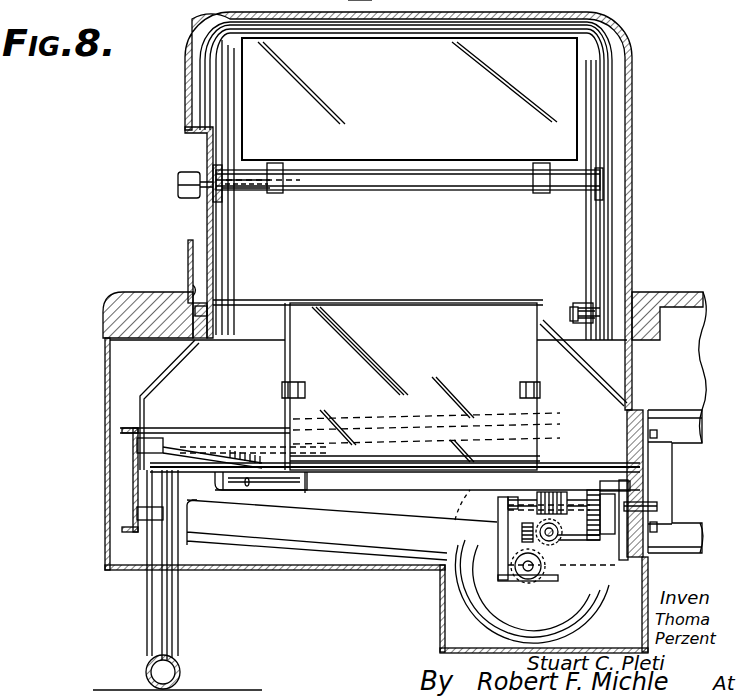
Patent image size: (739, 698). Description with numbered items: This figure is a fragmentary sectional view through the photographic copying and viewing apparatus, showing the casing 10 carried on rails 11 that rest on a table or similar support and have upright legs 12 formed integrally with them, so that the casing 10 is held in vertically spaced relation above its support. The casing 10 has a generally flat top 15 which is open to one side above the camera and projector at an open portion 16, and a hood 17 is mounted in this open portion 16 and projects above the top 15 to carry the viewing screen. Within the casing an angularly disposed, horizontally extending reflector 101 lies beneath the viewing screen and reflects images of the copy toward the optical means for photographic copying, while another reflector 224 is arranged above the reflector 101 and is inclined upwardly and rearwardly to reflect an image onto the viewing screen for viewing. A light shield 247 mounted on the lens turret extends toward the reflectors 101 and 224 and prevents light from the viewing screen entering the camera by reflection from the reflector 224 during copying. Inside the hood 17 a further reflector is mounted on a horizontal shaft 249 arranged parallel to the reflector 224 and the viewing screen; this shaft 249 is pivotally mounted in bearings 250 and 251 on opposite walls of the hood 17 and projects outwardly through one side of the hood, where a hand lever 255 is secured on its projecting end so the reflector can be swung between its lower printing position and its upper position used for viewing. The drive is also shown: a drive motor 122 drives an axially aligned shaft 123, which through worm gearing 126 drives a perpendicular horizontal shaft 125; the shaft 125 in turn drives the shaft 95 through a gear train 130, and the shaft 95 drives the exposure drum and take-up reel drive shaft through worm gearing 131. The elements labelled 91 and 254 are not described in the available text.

The casing 10 is at (157, 286).
The rails 11 is at (180, 675).
The upright legs 12 is at (183, 617).
The flat top 15 is at (682, 292).
The open portion 16 is at (187, 277).
The hood 17 is at (185, 103).
The top panel 91 is at (360, 5).
The shaft 95 is at (660, 508).
The horizontally extending reflector 101 is at (375, 478).
The drive motor 122 is at (475, 610).
The shaft 123 is at (520, 566).
The horizontal shaft 125 is at (580, 545).
The worm gearing 126 is at (528, 522).
The gear train 130 is at (600, 492).
The worm gearing 131 is at (548, 494).
The reflector 224 is at (310, 363).
The light shield 247 is at (547, 60).
The horizontal shaft 249 is at (436, 185).
The bearing 250 is at (592, 200).
The bearing 251 is at (220, 204).
The bracket 254 is at (202, 306).
The hand lever 255 is at (188, 183).